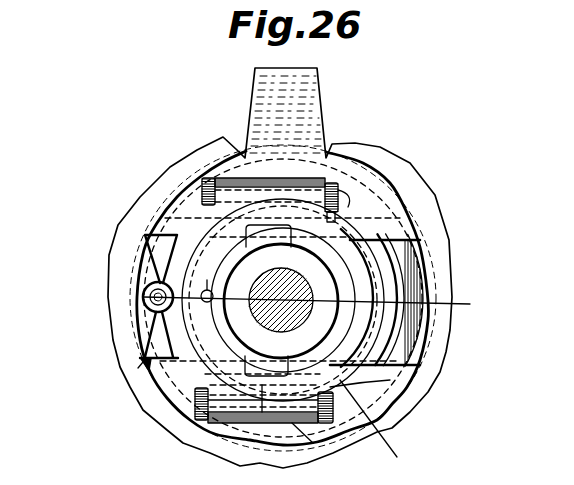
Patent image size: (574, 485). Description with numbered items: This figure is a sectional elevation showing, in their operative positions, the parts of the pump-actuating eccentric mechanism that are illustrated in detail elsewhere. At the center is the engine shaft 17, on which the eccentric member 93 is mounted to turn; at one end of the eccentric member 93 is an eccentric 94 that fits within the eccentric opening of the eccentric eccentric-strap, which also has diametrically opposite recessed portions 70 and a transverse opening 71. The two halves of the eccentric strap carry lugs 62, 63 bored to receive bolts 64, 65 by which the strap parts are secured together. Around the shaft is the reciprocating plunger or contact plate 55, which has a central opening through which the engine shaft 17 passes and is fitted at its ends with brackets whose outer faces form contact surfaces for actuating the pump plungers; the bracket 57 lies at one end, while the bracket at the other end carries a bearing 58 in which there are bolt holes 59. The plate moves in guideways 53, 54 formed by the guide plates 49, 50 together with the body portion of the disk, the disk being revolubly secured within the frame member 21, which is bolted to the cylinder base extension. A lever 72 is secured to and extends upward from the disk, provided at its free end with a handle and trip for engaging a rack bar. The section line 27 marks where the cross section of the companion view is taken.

The engine shaft 17 is at (279, 282).
The frame member 21 is at (362, 194).
The section line 27 is at (143, 297).
The guide plate 49 is at (378, 160).
The guide plate 50 is at (390, 380).
The guideway 53 is at (385, 213).
The guideway 54 is at (403, 395).
The reciprocating plunger plate 55 is at (172, 234).
The bracket 57 is at (403, 272).
The bearing 58 is at (143, 297).
The bolt holes 59 is at (143, 308).
The lug 62 is at (238, 178).
The lug 63 is at (330, 180).
The bolt 64 is at (343, 200).
The bolt 65 is at (357, 390).
The recessed portions 70 is at (270, 226).
The transverse opening 71 is at (207, 280).
The lever 72 is at (284, 88).
The eccentric member 93 is at (385, 258).
The eccentric 94 is at (143, 362).